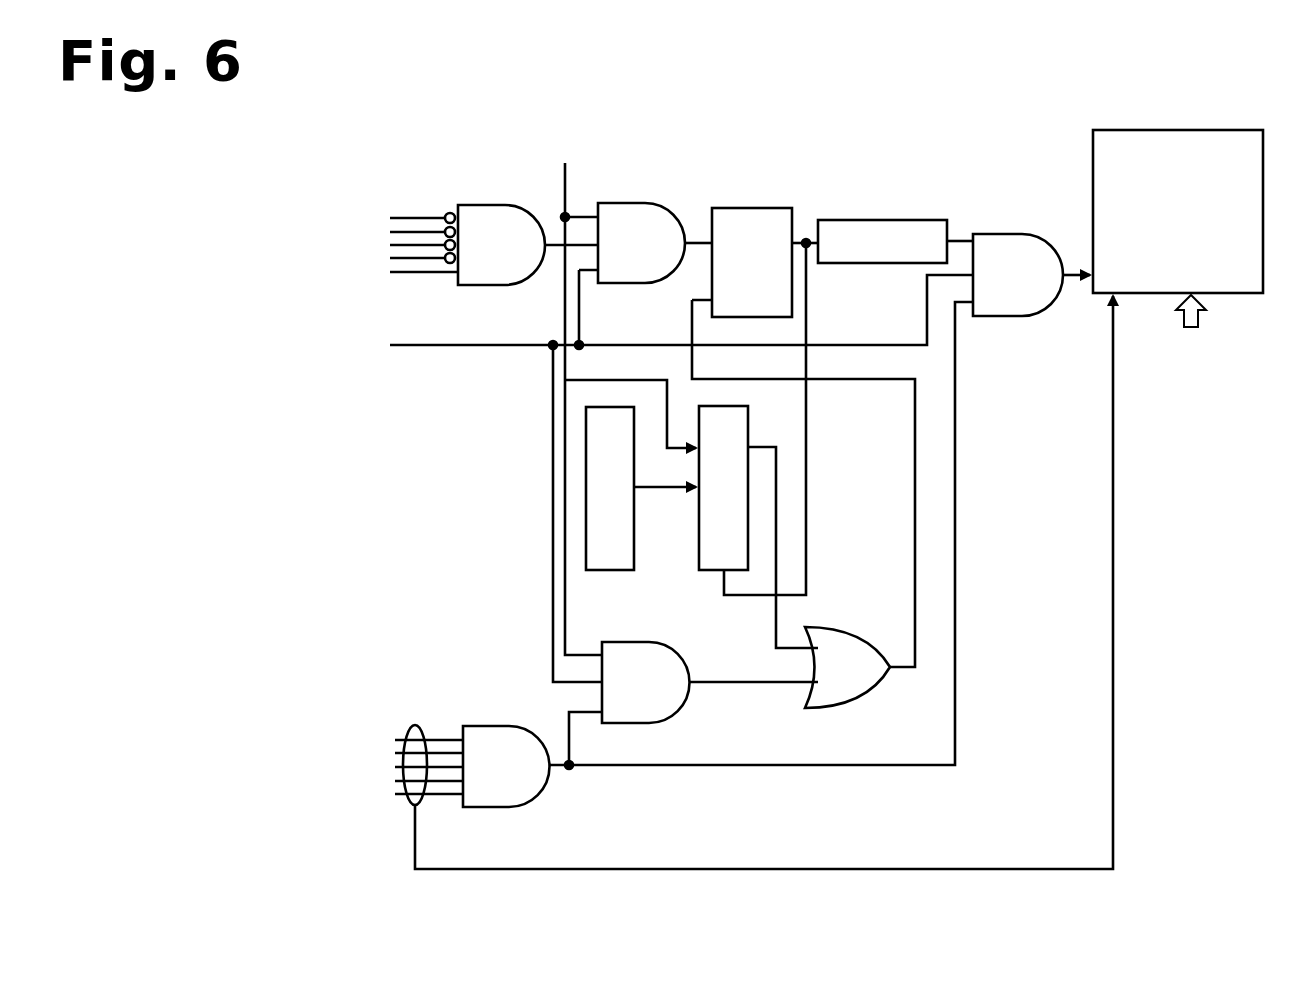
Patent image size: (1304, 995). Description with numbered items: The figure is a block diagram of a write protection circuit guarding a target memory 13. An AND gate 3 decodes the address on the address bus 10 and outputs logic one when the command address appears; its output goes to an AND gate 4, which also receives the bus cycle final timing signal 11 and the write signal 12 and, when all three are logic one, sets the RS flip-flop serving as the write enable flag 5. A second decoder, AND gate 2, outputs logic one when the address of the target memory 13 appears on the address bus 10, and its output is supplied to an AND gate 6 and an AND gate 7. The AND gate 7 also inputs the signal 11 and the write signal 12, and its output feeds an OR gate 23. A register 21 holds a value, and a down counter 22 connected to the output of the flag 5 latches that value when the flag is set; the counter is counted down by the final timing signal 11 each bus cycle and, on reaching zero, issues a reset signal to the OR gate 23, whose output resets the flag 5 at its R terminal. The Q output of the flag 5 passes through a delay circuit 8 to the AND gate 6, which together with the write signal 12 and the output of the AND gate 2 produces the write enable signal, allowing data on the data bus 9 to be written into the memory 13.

The AND gate 2 is at (532, 800).
The AND gate 3 is at (483, 285).
The AND gate 4 is at (628, 203).
The write enable flag 5 is at (767, 193).
The AND gate 6 is at (1002, 316).
The AND gate 7 is at (672, 722).
The delay circuit 8 is at (870, 263).
The data bus 9 is at (1215, 333).
The address bus 10 is at (376, 251).
The bus cycle final timing signal 11 is at (579, 361).
The write signal 12 is at (376, 347).
The memory 13 is at (1158, 130).
The register 21 is at (608, 570).
The down counter 22 is at (710, 570).
The OR gate 23 is at (870, 700).